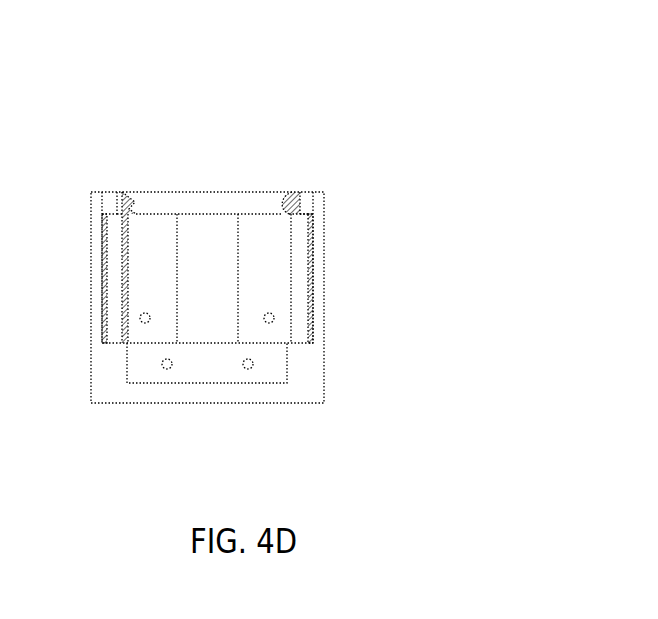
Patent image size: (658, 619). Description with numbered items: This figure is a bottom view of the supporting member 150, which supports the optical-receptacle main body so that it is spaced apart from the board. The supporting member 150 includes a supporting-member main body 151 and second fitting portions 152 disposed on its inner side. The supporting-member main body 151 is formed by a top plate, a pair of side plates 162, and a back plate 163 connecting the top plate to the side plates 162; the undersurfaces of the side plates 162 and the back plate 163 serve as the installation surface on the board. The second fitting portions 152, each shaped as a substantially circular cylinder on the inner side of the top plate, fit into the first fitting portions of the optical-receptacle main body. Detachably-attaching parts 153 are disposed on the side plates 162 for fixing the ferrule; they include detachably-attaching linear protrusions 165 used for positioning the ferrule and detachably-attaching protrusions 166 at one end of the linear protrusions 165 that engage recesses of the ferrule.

The supporting member 150 is at (372, 88).
The supporting-member main body 151 is at (325, 383).
The second fitting portions 152 is at (248, 369).
The detachably-attaching parts 153 is at (143, 119).
The side plates 162 is at (317, 310).
The back plate 163 is at (302, 392).
The detachably-attaching linear protrusions 165 is at (112, 265).
The detachably-attaching protrusions 166 is at (123, 205).